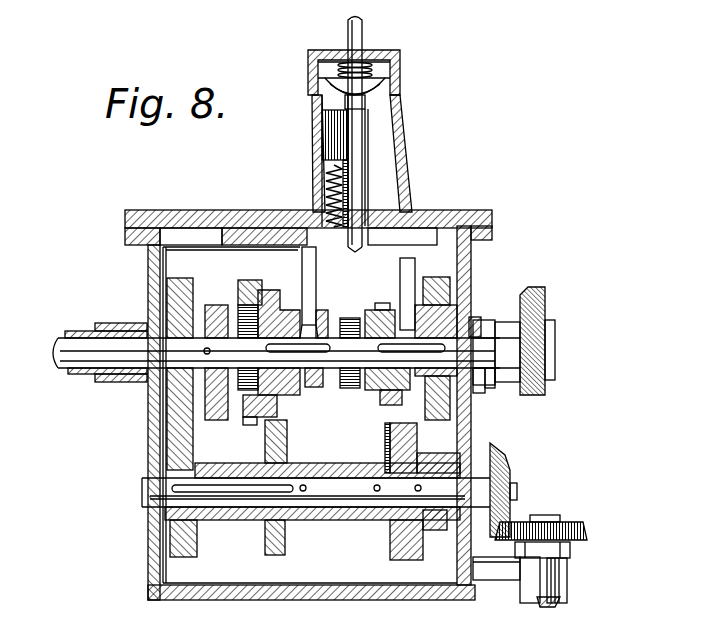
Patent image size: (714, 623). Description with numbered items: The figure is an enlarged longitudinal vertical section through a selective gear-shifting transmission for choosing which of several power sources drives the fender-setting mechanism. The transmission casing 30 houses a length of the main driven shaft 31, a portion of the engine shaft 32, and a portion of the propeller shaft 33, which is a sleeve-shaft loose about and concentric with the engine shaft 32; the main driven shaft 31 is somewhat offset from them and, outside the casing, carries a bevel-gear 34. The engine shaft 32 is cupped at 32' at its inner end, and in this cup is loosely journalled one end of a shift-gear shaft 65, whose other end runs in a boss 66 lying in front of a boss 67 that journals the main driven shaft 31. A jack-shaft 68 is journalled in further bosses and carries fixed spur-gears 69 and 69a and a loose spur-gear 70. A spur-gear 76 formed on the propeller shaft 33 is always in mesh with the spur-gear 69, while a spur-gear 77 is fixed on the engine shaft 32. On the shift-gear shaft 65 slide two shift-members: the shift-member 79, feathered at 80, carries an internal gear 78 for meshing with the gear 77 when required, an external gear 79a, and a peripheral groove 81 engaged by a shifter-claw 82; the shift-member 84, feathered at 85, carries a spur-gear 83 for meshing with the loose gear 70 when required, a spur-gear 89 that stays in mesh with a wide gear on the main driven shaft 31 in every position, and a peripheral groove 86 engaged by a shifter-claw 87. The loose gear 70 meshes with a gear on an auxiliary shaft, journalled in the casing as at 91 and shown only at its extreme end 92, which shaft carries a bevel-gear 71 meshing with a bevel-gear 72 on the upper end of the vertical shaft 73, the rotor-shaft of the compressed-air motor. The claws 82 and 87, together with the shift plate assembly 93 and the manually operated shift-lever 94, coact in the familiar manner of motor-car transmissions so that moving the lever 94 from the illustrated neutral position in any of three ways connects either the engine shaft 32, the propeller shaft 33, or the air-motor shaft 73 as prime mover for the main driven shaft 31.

The transmission casing 30 is at (150, 255).
The main driven shaft 31 is at (540, 350).
The engine shaft 32 is at (256, 340).
The cup 32' is at (218, 348).
The propeller shaft 33 is at (78, 327).
The bevel-gear 34 is at (528, 385).
The shift-gear shaft 65 is at (340, 325).
The boss 66 is at (480, 377).
The boss 67 is at (490, 373).
The jack-shaft 68 is at (388, 550).
The spur-gear 69 is at (180, 443).
The spur-gear 69a is at (267, 532).
The loose spur-gear 70 is at (427, 517).
The bevel-gear 71 is at (508, 468).
The bevel-gear 72 is at (555, 525).
The vertical shaft 73 is at (560, 595).
The spur-gear 76 is at (165, 410).
The spur-gear 77 is at (217, 400).
The internal gear 78 is at (250, 300).
The shift-member 79 is at (288, 400).
The external gear 79a is at (243, 427).
The feather 80 is at (317, 312).
The peripheral groove 81 is at (312, 388).
The shifter-claw 82 is at (310, 275).
The spur-gear 83 is at (467, 262).
The shift-member 84 is at (452, 320).
The feather 85 is at (418, 385).
The peripheral groove 86 is at (448, 300).
The shifter-claw 87 is at (400, 265).
The spur-gear 89 is at (357, 322).
The journal 91 is at (447, 450).
The auxiliary shaft end 92 is at (517, 486).
The shift plate assembly 93 is at (402, 237).
The shift-lever 94 is at (363, 123).